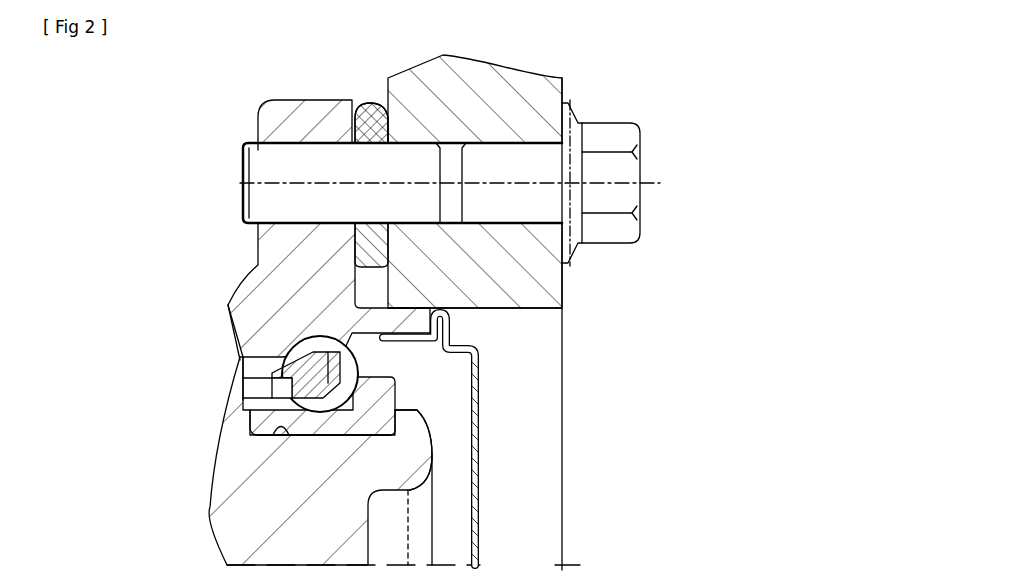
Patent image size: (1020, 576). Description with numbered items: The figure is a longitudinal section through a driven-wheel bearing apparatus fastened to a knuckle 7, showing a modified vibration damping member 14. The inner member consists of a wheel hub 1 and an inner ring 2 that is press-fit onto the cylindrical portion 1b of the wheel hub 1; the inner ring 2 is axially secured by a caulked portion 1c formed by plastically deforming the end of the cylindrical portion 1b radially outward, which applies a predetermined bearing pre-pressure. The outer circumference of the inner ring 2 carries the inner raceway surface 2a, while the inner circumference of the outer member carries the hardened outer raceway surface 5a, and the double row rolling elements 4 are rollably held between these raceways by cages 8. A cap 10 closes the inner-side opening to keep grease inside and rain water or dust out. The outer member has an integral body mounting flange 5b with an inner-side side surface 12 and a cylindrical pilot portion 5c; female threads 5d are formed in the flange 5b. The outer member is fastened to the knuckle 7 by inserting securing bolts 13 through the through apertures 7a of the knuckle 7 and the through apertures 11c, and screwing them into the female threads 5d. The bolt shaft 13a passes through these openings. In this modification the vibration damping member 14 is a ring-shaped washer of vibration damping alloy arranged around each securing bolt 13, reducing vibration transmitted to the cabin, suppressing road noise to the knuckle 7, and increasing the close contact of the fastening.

The wheel hub 1 is at (220, 531).
The cylindrical portion 1b is at (276, 427).
The caulked portion 1c is at (417, 420).
The inner ring 2 is at (260, 427).
The inner raceway surface 2a is at (313, 437).
The rolling elements 4 is at (318, 340).
The outer raceway surface 5a is at (283, 352).
The body mounting flange 5b is at (307, 112).
The cylindrical pilot portion 5c is at (413, 305).
The female thread 5d is at (283, 147).
The knuckle 7 is at (561, 92).
The through aperture 7a is at (537, 223).
The cage 8 is at (272, 390).
The cap 10 is at (482, 516).
The through aperture 11c is at (380, 220).
The inner-side side surface 12 is at (364, 252).
The securing bolt 13 is at (628, 160).
The bolt shaft 13a is at (262, 200).
The vibration damping member 14 is at (369, 106).